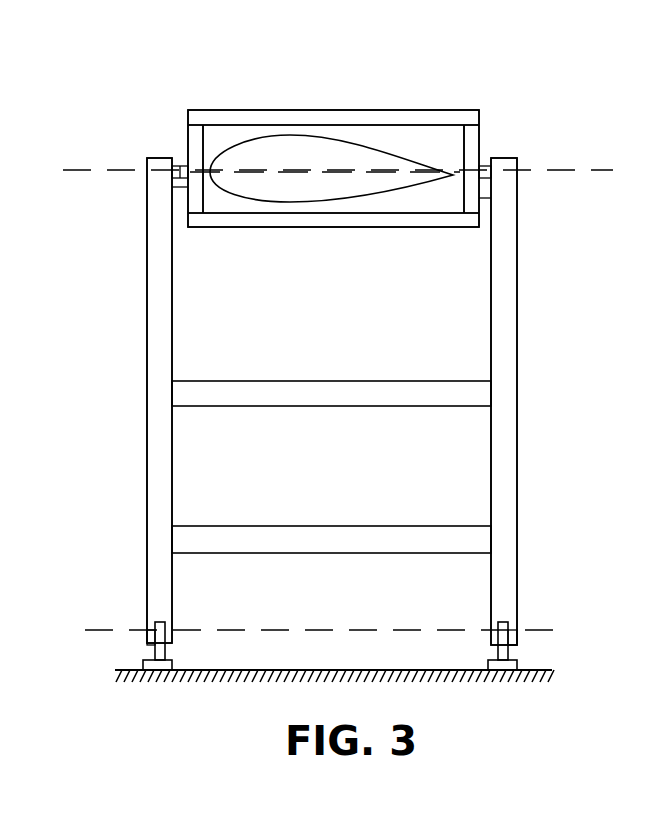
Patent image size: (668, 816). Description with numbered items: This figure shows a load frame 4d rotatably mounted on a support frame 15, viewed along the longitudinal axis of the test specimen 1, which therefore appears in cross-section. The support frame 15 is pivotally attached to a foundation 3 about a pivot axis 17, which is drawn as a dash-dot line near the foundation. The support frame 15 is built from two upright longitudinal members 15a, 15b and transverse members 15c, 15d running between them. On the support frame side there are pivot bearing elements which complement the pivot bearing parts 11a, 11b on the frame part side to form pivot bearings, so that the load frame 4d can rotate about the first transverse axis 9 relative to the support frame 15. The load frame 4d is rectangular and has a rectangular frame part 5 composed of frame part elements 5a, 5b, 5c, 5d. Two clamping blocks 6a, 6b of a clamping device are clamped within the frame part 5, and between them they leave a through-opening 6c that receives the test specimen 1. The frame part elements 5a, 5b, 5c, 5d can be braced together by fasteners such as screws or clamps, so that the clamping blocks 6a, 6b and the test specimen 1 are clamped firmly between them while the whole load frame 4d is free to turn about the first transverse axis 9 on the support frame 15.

The test specimen 1 is at (397, 156).
The foundation 3 is at (388, 670).
The load frame 4d is at (432, 107).
The frame part 5 is at (274, 107).
The frame part element 5a is at (378, 111).
The frame part element 5b is at (318, 214).
The frame part element 5c is at (184, 187).
The frame part element 5d is at (483, 198).
The clamping block 6a is at (227, 138).
The clamping block 6b is at (216, 200).
The through-opening 6c is at (381, 186).
The first transverse axis 9 is at (600, 170).
The pivot bearing part 11a is at (487, 163).
The pivot bearing part 11b is at (182, 164).
The support frame 15 is at (520, 380).
The longitudinal member 15a is at (520, 287).
The longitudinal member 15b is at (147, 346).
The transverse member 15c is at (353, 382).
The transverse member 15d is at (370, 526).
The pivot axis 17 is at (558, 628).